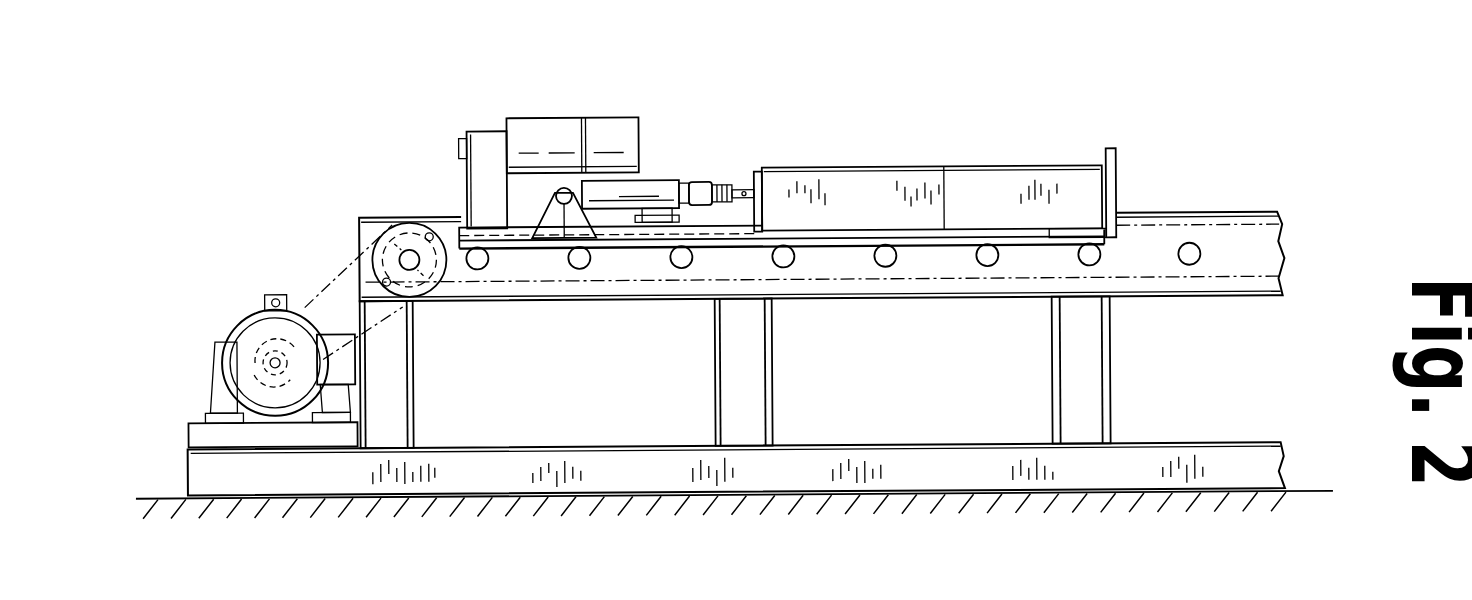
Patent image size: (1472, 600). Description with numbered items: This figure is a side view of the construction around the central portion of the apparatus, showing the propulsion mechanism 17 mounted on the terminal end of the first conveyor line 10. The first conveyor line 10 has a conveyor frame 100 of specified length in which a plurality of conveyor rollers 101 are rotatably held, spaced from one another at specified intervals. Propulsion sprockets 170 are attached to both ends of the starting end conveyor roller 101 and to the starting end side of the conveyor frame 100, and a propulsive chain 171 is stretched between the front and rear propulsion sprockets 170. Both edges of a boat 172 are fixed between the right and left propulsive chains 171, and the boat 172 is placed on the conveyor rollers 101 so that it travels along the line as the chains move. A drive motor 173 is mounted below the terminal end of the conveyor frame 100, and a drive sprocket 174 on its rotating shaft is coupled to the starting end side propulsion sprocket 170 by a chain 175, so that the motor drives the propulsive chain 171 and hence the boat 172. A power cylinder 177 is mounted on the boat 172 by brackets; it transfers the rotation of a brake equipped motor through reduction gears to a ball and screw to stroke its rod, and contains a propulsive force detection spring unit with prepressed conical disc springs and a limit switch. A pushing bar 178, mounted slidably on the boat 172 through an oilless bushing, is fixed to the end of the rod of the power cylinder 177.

The first conveyor line 10 is at (1157, 326).
The propulsion mechanism 17 is at (795, 128).
The conveyor frame 100 is at (1240, 306).
The conveyor rollers 101 is at (437, 302).
The propulsion sprockets 170 is at (415, 235).
The propulsive chain 171 is at (607, 302).
The boat 172 is at (655, 262).
The drive motor 173 is at (252, 339).
The drive sprocket 174 is at (393, 231).
The chain 175 is at (323, 282).
The power cylinder 177 is at (552, 135).
The pushing bar 178 is at (913, 190).